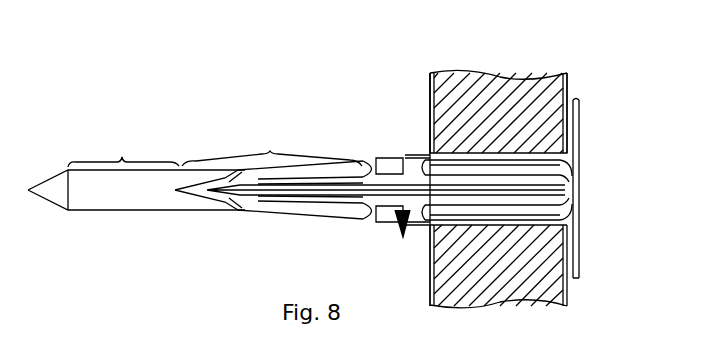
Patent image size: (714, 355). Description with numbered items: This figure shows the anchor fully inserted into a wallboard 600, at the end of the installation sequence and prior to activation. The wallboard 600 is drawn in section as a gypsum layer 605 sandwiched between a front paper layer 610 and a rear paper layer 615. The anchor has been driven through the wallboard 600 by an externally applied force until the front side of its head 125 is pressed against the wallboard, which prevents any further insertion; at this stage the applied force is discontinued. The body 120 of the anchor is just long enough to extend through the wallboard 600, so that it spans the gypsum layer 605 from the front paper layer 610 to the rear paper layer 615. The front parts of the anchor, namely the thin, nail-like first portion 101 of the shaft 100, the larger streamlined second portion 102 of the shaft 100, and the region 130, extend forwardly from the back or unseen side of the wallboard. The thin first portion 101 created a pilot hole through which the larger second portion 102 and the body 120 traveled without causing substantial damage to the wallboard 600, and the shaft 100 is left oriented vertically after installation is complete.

The shaft 100 is at (141, 212).
The first portion of the shaft 101 is at (123, 147).
The second portion of the shaft 102 is at (273, 175).
The body 120 is at (417, 151).
The head 125 is at (580, 113).
The region 130 is at (400, 238).
The wallboard 600 is at (398, 97).
The gypsum layer 605 is at (503, 75).
The front paper layer 610 is at (570, 73).
The rear paper layer 615 is at (428, 73).